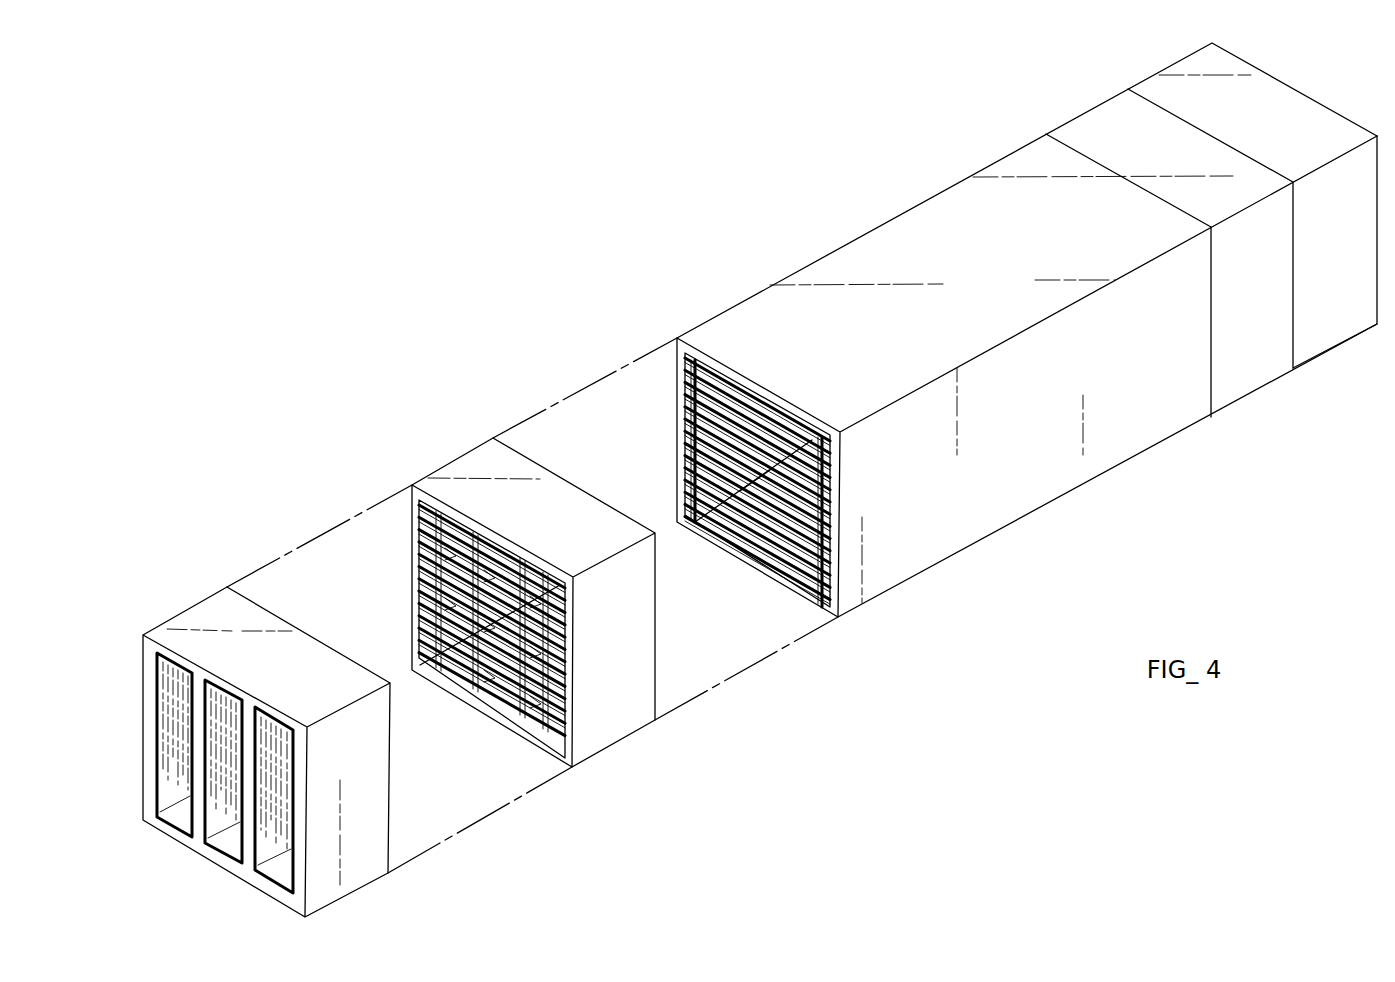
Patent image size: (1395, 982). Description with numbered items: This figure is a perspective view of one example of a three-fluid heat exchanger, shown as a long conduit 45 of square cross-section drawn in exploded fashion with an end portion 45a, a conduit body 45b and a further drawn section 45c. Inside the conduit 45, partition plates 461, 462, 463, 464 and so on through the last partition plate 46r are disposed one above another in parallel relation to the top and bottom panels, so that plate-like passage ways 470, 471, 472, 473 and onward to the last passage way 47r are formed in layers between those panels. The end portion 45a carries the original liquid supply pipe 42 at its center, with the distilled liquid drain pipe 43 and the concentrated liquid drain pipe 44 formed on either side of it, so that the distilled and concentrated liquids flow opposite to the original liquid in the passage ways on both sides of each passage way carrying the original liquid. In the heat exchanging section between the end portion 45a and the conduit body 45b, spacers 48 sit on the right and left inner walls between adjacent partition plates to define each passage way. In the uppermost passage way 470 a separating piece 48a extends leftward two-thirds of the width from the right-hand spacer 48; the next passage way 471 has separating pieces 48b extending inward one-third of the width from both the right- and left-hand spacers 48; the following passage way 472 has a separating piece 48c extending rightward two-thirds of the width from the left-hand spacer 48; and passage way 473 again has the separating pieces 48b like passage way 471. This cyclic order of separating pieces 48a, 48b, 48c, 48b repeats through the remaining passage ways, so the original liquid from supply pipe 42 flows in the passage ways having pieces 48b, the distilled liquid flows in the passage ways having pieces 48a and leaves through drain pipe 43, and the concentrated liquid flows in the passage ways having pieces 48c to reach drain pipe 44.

The original liquid supply pipe 42 is at (230, 807).
The distilled liquid drain pipe 43 is at (183, 783).
The concentrated liquid drain pipe 44 is at (278, 828).
The conduit 45 is at (950, 556).
The end portion of the conduit 45a is at (202, 607).
The conduit body 45b is at (735, 305).
The intermediate section of housing 45c is at (453, 467).
The partition plate 46r is at (737, 542).
The passage way 47r is at (773, 568).
The partition plate 461 is at (692, 383).
The partition plate 462 is at (693, 412).
The partition plate 463 is at (695, 435).
The partition plate 464 is at (693, 463).
The uppermost passage way 470 is at (720, 380).
The passage way 471 is at (743, 403).
The passage way 472 is at (777, 430).
The passage way 473 is at (790, 453).
The spacer 48 is at (828, 473).
The separating piece 48a is at (540, 570).
The separating pieces 48b is at (420, 577).
The separating piece 48c is at (420, 540).